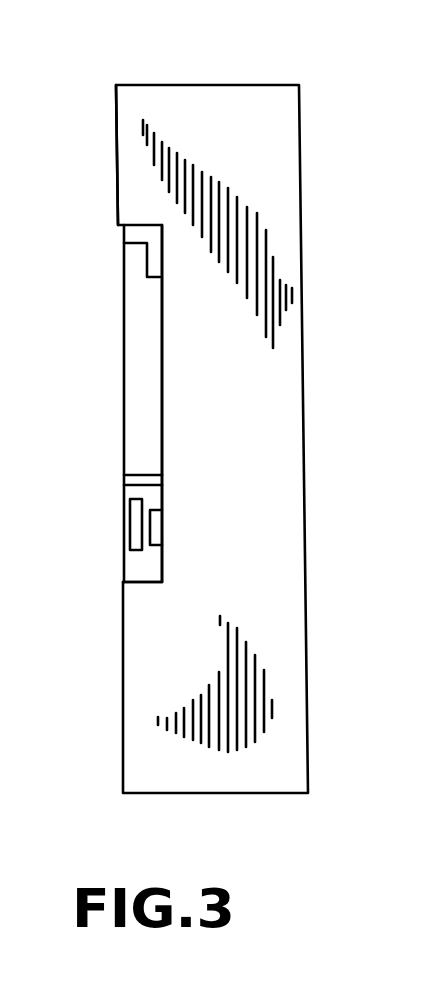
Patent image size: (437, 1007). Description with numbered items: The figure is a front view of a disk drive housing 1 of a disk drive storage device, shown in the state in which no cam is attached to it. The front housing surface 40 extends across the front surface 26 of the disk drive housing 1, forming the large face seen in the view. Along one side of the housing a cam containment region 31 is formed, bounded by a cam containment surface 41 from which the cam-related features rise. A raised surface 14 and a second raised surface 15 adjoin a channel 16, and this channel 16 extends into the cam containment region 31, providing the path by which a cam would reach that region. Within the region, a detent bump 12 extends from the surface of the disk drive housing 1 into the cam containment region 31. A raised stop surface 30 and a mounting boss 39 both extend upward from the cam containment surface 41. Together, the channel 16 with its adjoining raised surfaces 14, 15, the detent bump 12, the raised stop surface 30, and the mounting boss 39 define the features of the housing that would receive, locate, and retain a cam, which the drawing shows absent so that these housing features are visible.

The disk drive housing 1 is at (352, 110).
The front housing surface 40 is at (210, 115).
The front surface 26 is at (116, 135).
The raised stop surface 30 is at (145, 257).
The cam containment region 31 is at (140, 316).
The cam containment surface 41 is at (160, 357).
The detent bump 12 is at (143, 475).
The raised surface 14 is at (125, 492).
The channel 16 is at (135, 528).
The mounting boss 39 is at (158, 533).
The raised surface 15 is at (125, 560).